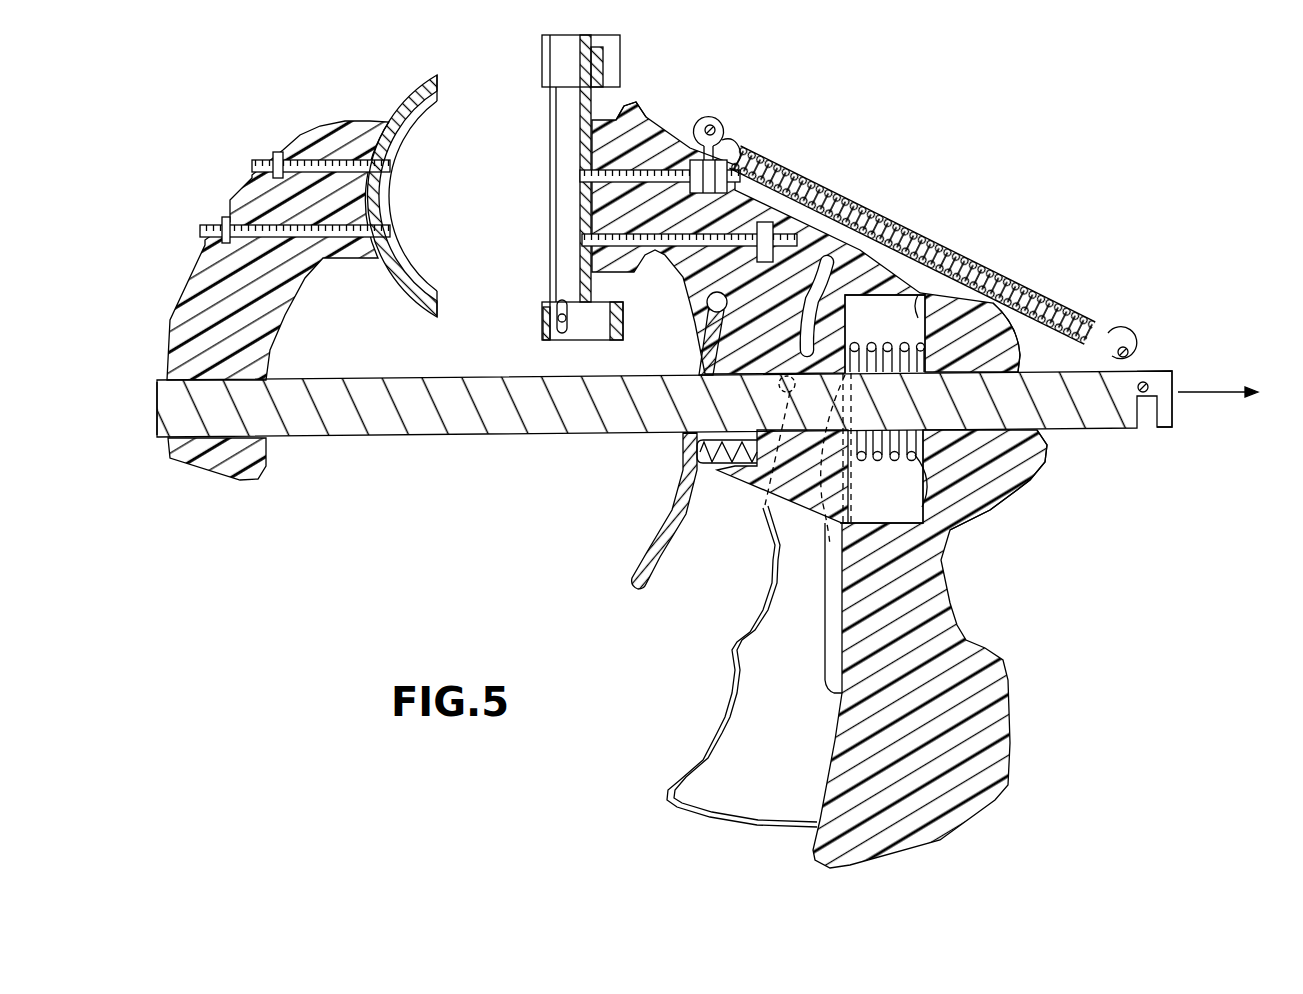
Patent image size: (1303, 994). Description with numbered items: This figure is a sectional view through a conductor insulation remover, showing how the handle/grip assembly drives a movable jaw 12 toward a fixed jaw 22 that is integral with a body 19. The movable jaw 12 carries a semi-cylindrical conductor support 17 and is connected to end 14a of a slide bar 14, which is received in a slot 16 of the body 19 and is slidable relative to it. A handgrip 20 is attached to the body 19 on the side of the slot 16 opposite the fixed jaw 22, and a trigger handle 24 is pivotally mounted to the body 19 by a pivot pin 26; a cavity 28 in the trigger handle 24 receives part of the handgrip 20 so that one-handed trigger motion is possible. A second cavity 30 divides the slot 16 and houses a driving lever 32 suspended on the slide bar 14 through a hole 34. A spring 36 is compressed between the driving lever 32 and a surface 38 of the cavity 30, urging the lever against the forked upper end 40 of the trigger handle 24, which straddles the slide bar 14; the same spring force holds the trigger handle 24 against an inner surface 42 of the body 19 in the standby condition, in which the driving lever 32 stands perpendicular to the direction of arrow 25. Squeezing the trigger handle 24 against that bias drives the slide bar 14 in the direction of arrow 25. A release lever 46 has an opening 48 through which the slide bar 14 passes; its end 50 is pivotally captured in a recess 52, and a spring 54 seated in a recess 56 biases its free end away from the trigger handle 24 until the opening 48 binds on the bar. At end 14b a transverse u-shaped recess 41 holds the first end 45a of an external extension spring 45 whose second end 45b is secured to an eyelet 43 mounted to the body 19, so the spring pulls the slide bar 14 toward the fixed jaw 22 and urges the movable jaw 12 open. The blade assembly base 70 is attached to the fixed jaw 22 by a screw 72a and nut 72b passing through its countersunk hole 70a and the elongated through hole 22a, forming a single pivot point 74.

The movable jaw 12 is at (299, 138).
The slide bar 14 is at (434, 440).
The end of slide bar 14a is at (145, 417).
The end of slide bar 14b is at (1176, 398).
The slot 16 is at (1008, 310).
The conductor support 17 is at (422, 140).
The body 19 is at (1020, 492).
The handgrip 20 is at (1012, 718).
The fixed jaw 22 is at (657, 120).
The elongated through hole 22a is at (637, 115).
The trigger handle 24 is at (717, 732).
The arrow 25 is at (1234, 392).
The pivot pin 26 is at (778, 372).
The cavity 28 is at (743, 757).
The second cavity 30 is at (864, 332).
The driving lever 32 is at (848, 348).
The hole 34 is at (820, 515).
The spring 36 is at (922, 507).
The surface 38 is at (928, 295).
The upper end 40 is at (835, 360).
The transverse u-shaped recess 41 is at (1160, 407).
The inner surface 42 is at (845, 285).
The eyelet 43 is at (727, 128).
The external extension spring 45 is at (1045, 300).
The first end 45a is at (1138, 357).
The second end 45b is at (745, 140).
The release lever 46 is at (650, 546).
The opening 48 is at (690, 430).
The end 50 is at (699, 327).
The recess 52 is at (705, 298).
The spring 54 is at (713, 468).
The recess 56 is at (722, 468).
The base 70 is at (607, 94).
The countersunk hole 70a is at (582, 188).
The screw 72a is at (585, 242).
The nut 72b is at (748, 142).
The pivot point 74 is at (580, 176).